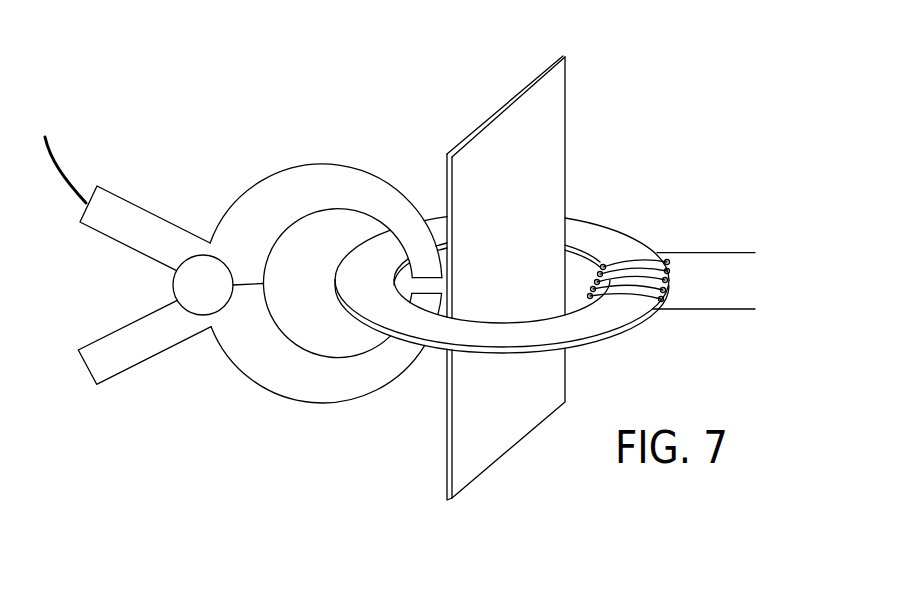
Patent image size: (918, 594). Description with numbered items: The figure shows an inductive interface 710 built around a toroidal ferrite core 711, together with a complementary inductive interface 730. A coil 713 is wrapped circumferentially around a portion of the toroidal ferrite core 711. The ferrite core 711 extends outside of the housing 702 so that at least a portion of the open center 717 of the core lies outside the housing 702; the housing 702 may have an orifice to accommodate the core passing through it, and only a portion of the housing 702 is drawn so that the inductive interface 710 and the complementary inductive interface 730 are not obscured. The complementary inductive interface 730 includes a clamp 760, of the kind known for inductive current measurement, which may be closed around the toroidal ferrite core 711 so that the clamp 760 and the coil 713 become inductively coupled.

The housing 702 is at (551, 86).
The inductive interface 710 is at (554, 190).
The toroidal ferrite core 711 is at (611, 241).
The coil 713 is at (671, 280).
The open center 717 is at (573, 283).
The complementary inductive interface 730 is at (375, 147).
The clamp 760 is at (148, 162).